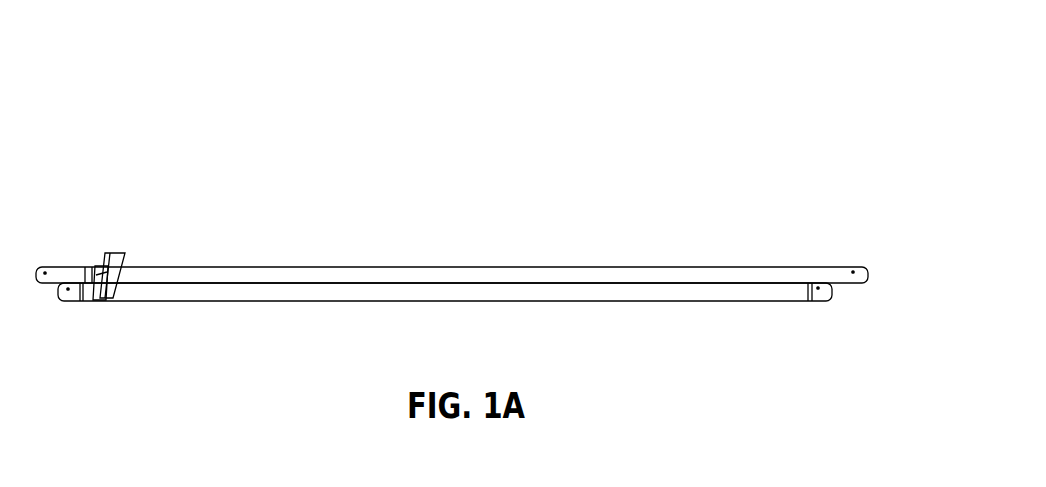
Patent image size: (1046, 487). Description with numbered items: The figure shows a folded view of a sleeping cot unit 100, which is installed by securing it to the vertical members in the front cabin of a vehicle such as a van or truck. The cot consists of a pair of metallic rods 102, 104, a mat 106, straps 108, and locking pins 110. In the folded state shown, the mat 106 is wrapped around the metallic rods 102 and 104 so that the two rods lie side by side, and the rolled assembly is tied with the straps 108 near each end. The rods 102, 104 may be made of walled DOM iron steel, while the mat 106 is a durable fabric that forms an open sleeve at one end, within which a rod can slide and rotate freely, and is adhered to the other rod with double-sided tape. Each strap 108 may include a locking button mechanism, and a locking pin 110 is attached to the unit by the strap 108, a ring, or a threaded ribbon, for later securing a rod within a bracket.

The sleeping cot unit 100 is at (686, 98).
The metallic rod 102 is at (63, 269).
The metallic rod 104 is at (66, 294).
The mat 106 is at (416, 292).
The strap 108 is at (116, 297).
The locking pin 110 is at (105, 267).